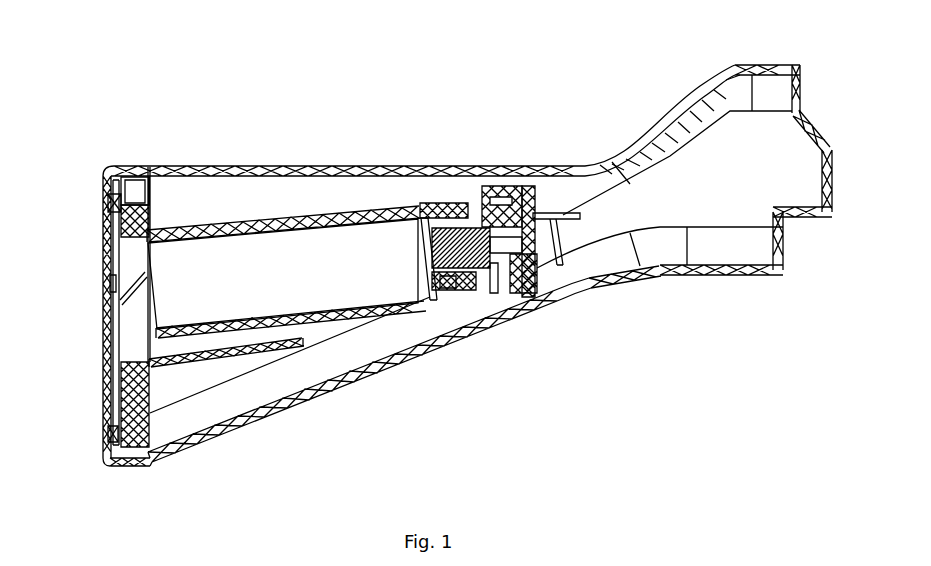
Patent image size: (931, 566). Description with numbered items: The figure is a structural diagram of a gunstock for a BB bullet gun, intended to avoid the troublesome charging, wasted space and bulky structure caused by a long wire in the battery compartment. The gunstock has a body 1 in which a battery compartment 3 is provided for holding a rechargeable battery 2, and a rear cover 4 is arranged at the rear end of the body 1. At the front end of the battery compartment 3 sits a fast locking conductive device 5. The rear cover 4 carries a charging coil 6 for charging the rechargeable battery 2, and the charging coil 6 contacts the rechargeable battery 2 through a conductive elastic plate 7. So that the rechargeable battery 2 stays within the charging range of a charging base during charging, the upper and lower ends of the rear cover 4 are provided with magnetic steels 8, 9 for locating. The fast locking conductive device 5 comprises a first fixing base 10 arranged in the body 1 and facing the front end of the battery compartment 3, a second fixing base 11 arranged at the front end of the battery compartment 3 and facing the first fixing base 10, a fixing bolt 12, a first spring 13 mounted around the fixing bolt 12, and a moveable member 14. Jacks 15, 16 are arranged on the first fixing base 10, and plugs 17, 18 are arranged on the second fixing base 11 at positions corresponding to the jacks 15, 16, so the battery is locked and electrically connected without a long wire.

The body 1 is at (225, 170).
The rechargeable battery 2 is at (347, 253).
The battery compartment 3 is at (310, 218).
The rear cover 4 is at (115, 385).
The fast locking conductive device 5 is at (493, 195).
The charging coil 6 is at (112, 283).
The conductive elastic plate 7 is at (132, 283).
The magnetic steel 8 is at (112, 202).
The magnetic steel 9 is at (110, 433).
The first fixing base 10 is at (528, 288).
The second fixing base 11 is at (450, 283).
The fixing bolt 12 is at (498, 287).
The first spring 13 is at (436, 280).
The moveable member 14 is at (477, 228).
The jack 15 is at (513, 205).
The jack 16 is at (530, 270).
The plug 17 is at (455, 208).
The plug 18 is at (467, 283).